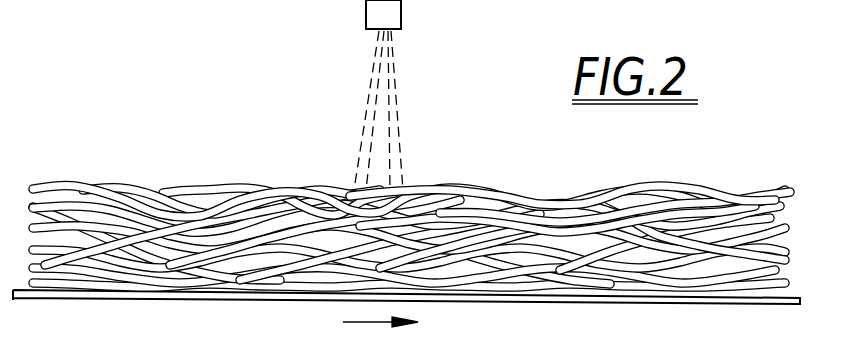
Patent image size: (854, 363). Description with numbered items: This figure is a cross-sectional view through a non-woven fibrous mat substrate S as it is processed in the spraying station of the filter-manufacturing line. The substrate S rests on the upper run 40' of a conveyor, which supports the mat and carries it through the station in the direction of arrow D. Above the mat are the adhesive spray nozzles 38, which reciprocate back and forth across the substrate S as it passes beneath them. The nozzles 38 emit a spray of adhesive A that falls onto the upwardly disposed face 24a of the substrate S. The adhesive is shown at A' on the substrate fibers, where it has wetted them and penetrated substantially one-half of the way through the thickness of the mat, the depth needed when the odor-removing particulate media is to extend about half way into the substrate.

The adhesive spray nozzles 38 is at (402, 17).
The upwardly disposed face 24a is at (207, 180).
The substrate S is at (60, 181).
The adhesive A is at (406, 110).
The adhesive on the substrate fibers A' is at (570, 183).
The direction of travel D is at (396, 323).
The upper run of conveyor 40' is at (406, 318).